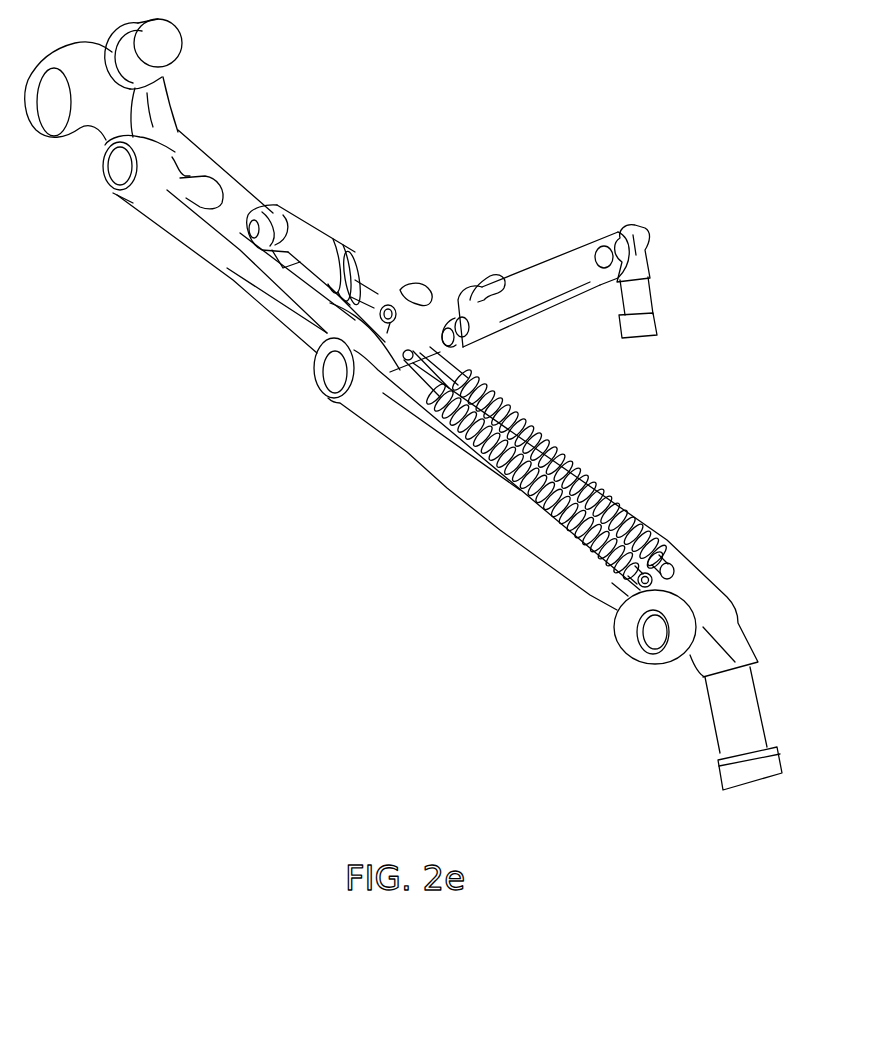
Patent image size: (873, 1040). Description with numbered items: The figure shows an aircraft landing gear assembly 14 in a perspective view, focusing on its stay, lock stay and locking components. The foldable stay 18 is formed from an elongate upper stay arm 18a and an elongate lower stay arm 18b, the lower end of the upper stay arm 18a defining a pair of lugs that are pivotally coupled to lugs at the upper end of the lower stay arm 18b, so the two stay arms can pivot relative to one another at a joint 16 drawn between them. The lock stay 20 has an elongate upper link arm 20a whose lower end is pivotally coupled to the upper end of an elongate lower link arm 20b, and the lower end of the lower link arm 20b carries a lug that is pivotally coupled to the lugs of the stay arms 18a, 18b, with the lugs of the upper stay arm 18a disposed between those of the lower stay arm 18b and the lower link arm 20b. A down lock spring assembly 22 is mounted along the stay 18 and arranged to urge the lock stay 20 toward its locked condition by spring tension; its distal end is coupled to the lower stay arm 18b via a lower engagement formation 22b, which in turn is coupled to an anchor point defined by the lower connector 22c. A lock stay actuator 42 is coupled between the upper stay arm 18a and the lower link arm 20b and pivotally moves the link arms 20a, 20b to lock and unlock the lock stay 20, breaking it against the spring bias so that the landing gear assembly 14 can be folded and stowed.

The aircraft landing gear assembly 14 is at (517, 149).
The pivot 16 is at (332, 380).
The foldable stay 18 is at (267, 315).
The upper stay arm 18a is at (218, 268).
The lower stay arm 18b is at (447, 490).
The lock stay 20 is at (537, 270).
The upper link arm 20a is at (588, 247).
The lower link arm 20b is at (428, 292).
The down lock spring assembly 22 is at (558, 440).
The lower engagement formation 22b is at (637, 578).
The lower connector 22c is at (620, 590).
The lock stay actuator 42 is at (336, 237).